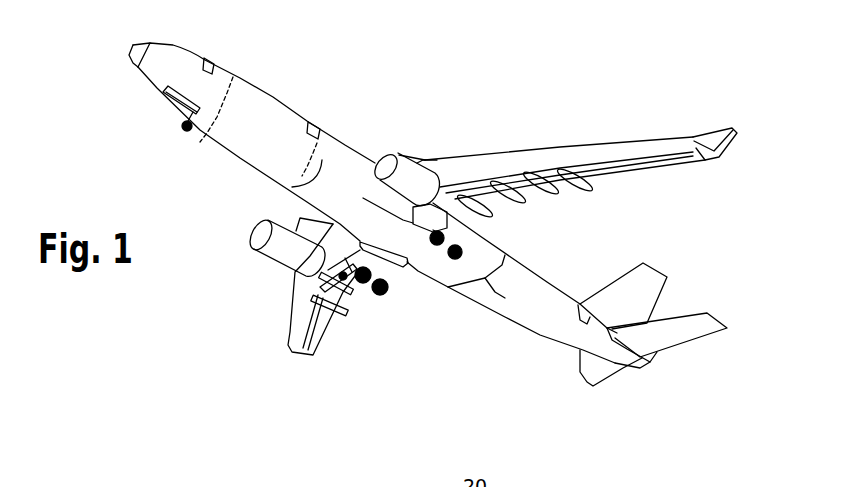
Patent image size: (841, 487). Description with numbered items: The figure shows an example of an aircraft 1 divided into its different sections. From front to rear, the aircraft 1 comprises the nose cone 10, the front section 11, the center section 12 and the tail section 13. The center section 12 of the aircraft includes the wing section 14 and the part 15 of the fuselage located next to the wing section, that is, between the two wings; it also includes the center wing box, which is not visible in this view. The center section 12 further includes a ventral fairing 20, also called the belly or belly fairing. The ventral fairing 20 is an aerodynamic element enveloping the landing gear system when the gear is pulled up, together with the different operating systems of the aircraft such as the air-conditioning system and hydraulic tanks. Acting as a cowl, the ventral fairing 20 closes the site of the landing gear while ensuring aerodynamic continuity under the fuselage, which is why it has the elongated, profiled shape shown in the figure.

The aircraft 1 is at (273, 95).
The nose cone 10 is at (140, 71).
The front section 11 is at (237, 157).
The center section 12 is at (475, 298).
The tail section 13 is at (553, 338).
The wing section 14 is at (537, 155).
The part of the fuselage located next to the wing section 15 is at (487, 238).
The ventral fairing 20 is at (433, 263).